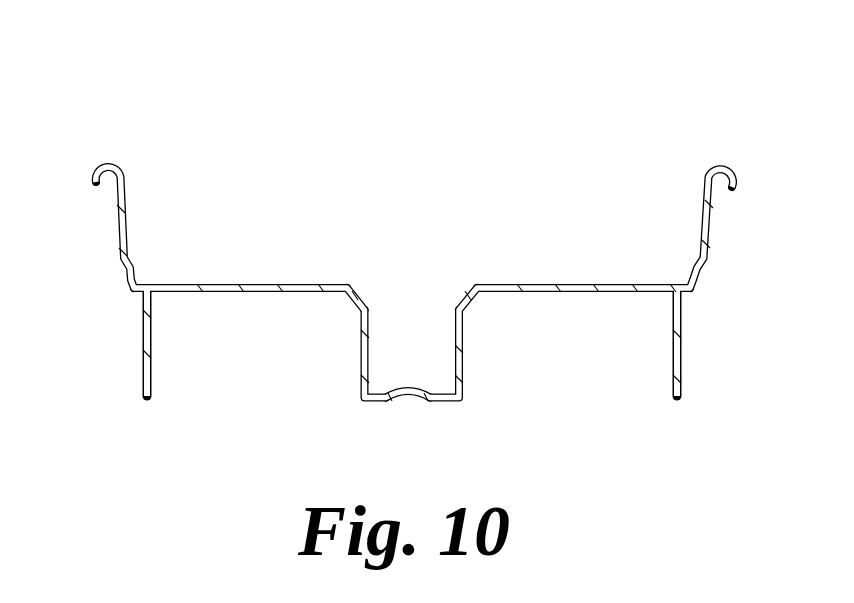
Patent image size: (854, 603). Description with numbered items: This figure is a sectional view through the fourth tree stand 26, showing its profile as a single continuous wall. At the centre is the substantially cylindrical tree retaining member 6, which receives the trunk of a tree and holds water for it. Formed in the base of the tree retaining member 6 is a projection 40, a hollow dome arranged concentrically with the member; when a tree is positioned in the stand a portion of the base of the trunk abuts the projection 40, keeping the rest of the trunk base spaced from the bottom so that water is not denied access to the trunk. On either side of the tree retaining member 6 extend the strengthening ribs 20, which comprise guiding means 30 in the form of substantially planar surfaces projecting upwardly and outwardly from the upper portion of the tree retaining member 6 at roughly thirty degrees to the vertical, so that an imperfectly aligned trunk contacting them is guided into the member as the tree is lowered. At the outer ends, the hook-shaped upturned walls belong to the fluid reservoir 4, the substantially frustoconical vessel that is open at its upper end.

The tree stand 26 is at (83, 112).
The fluid reservoir 4 is at (126, 192).
The strengthening ribs 20 is at (262, 285).
The guiding means 30 is at (361, 299).
The tree retaining member 6 is at (465, 360).
The projection 40 is at (407, 386).